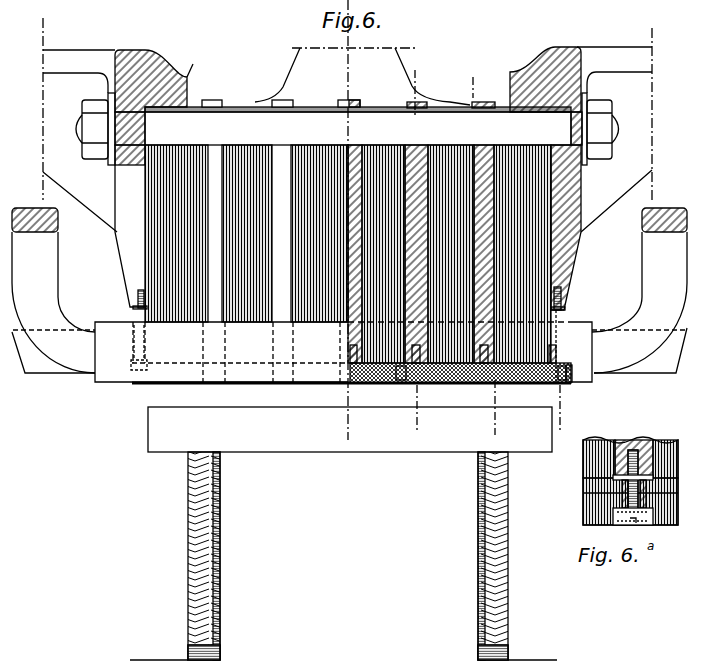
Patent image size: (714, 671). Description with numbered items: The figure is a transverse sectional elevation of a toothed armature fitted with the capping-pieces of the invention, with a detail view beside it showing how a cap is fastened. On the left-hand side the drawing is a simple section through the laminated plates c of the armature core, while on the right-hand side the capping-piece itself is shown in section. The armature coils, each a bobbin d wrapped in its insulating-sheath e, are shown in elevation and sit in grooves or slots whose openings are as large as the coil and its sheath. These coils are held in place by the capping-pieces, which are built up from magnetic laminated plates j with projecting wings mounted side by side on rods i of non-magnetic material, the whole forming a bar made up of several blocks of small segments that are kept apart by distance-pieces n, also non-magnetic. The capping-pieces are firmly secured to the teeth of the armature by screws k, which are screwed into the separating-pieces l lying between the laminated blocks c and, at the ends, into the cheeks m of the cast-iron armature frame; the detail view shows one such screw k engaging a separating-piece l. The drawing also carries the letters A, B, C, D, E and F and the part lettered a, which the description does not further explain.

In FIG. 6, the base or bed plate with legs a is at (343, 533).
In FIG. 6, the laminated plates c is at (348, 254).
In FIG. 6, the separating-pieces l is at (420, 254).
In FIG. 6A, the separating-pieces l is at (630, 436).
In FIG. 6, the cheeks m is at (348, 178).
In FIG. 6, the bobbin d is at (349, 290).
In FIG. 6, the insulating-sheath e is at (343, 346).
In FIG. 6, the screws k is at (456, 376).
In FIG. 6A, the screws k is at (634, 524).
In FIG. 6, the magnetic laminated plates j is at (460, 386).
In FIG. 6, the distance-pieces n is at (487, 385).
In FIG. 6, the rods i is at (571, 367).
In FIG. 6, the section line A-B A is at (352, 286).
In FIG. 6, the section line A- B is at (566, 409).
In FIG. 6, the section line C-D C is at (406, 92).
In FIG. 6, the section line C- D is at (407, 408).
In FIG. 6, the section line E-F E is at (466, 88).
In FIG. 6, the section line E- F is at (497, 407).